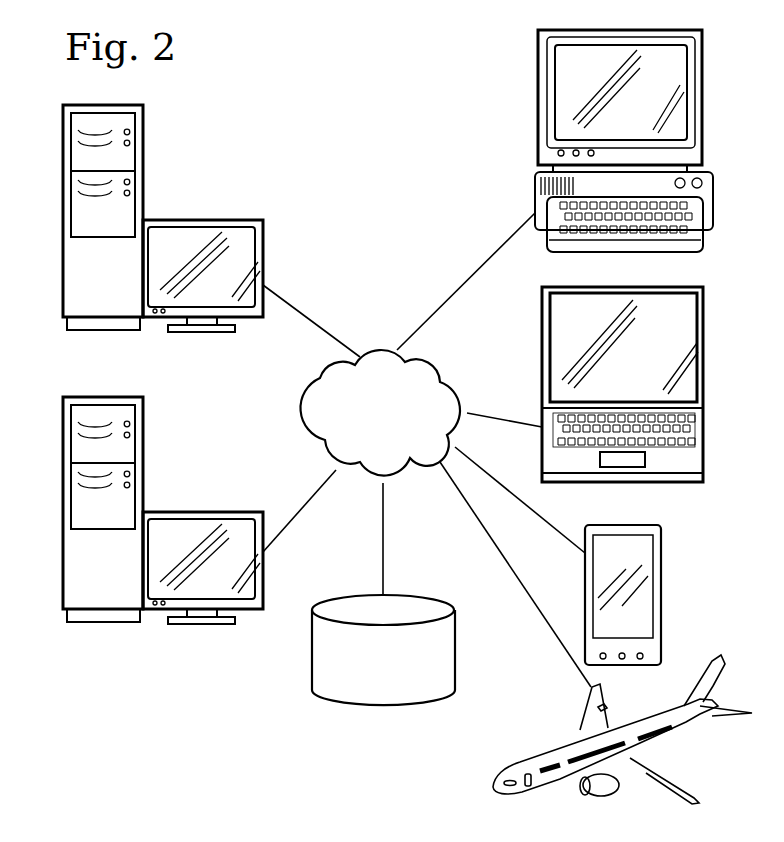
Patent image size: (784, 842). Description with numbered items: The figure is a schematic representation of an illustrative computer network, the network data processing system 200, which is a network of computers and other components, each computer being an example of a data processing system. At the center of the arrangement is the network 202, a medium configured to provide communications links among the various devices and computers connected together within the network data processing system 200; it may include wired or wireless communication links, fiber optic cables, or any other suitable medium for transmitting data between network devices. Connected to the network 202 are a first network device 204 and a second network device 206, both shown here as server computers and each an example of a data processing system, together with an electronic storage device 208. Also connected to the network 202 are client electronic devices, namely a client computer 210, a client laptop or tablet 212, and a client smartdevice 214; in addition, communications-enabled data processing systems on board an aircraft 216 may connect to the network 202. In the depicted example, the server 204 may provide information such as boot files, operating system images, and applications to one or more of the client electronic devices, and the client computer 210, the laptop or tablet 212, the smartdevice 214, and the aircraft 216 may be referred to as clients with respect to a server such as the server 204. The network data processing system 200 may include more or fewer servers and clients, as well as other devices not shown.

The network data processing system 200 is at (366, 169).
The network 202 is at (366, 449).
The first network device 204 is at (90, 104).
The second network device 206 is at (163, 514).
The electronic storage device 208 is at (366, 686).
The client computer 210 is at (702, 73).
The client laptop or tablet 212 is at (703, 330).
The client smartdevice 214 is at (663, 594).
The aircraft 216 is at (653, 747).